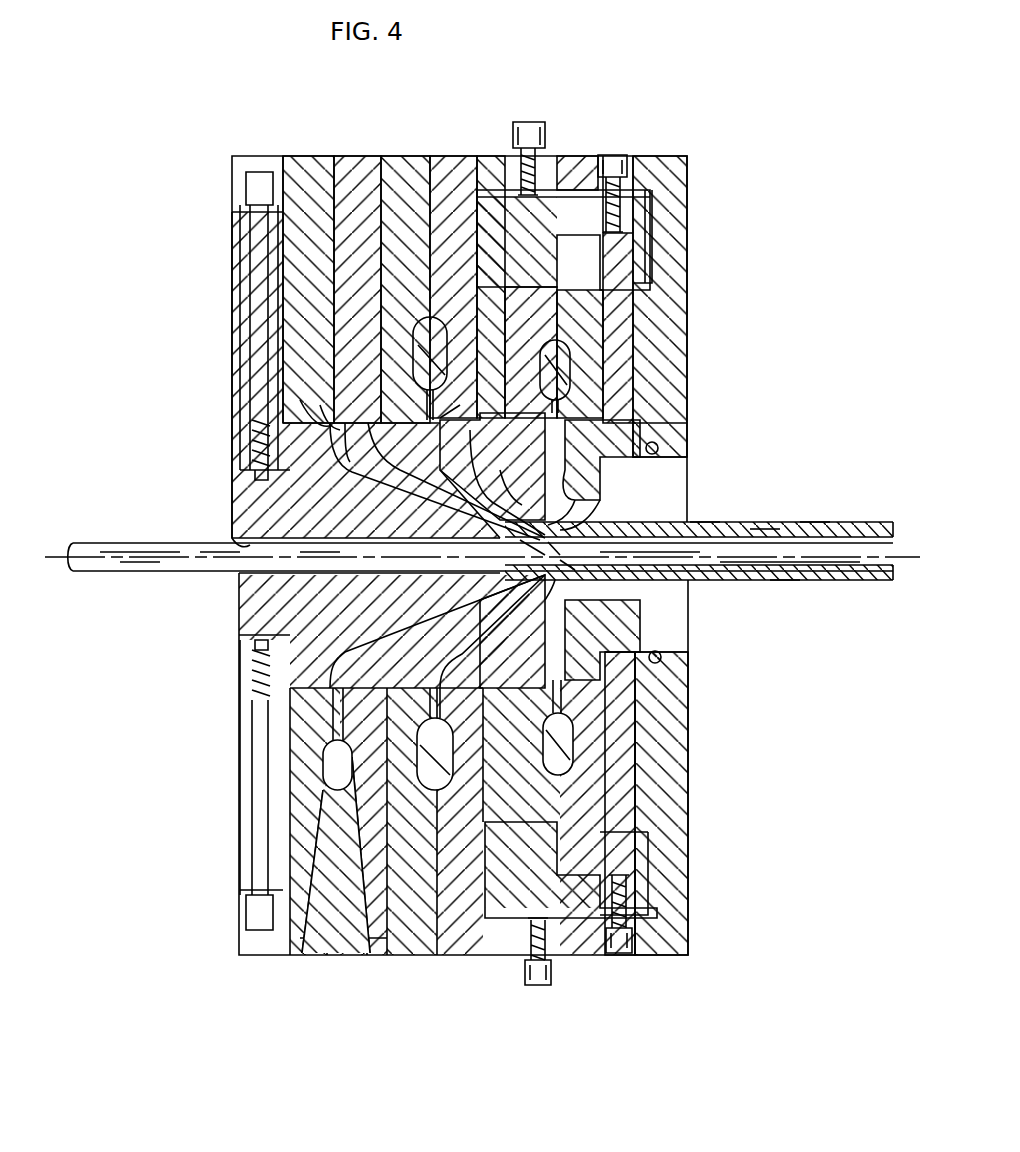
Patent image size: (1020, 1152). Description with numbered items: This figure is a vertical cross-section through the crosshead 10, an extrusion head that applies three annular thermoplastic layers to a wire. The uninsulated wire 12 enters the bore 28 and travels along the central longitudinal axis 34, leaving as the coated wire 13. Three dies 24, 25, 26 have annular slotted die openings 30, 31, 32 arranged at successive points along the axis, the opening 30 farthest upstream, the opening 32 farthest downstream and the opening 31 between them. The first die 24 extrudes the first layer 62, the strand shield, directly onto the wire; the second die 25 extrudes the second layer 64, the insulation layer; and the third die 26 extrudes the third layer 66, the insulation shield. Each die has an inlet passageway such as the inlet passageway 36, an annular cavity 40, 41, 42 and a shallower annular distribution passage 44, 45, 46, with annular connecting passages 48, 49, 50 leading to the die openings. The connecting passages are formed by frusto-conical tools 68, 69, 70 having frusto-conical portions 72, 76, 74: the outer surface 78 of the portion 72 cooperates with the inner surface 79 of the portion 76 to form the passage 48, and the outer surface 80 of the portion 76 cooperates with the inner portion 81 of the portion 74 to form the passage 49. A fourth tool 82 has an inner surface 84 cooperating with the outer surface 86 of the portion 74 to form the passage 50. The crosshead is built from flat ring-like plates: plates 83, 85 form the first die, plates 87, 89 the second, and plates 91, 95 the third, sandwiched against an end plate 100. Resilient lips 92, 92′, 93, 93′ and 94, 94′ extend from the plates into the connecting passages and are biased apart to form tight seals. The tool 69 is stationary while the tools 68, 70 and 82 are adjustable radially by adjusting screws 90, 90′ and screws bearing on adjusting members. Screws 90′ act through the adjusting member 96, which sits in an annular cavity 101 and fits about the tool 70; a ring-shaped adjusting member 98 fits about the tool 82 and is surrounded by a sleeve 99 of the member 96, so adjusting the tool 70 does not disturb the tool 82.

The crosshead 10 is at (222, 170).
The wire 12 is at (108, 548).
The coated wire 13 is at (793, 580).
The first die 24 is at (318, 958).
The second die 25 is at (437, 958).
The third die 26 is at (660, 962).
The bore 28 is at (240, 545).
The die opening 30 is at (547, 555).
The die opening 31 is at (600, 540).
The die opening 32 is at (642, 540).
The central longitudinal axis 34 is at (892, 535).
The inlet passageway 36 is at (348, 935).
The annular cavity 40 is at (330, 790).
The annular cavity 41 is at (440, 785).
The annular cavity 42 is at (570, 746).
The distribution passage 44 is at (330, 748).
The distribution passage 45 is at (340, 700).
The distribution passage 46 is at (640, 700).
The connecting passage 48 is at (402, 625).
The connecting passage 49 is at (595, 600).
The connecting passage 50 is at (600, 620).
The first layer 62 is at (732, 530).
The second layer 64 is at (778, 530).
The third layer 66 is at (820, 525).
The tool 68 is at (240, 496).
The tool 69 is at (366, 420).
The tool 70 is at (530, 360).
The frusto-conical portion 72 is at (432, 506).
The frusto-conical portion 74 is at (592, 478).
The frusto-conical portion 76 is at (487, 478).
The outer surface 78 is at (398, 476).
The inner surface 79 is at (395, 500).
The outer surface 80 is at (526, 460).
The inner portion 81 is at (528, 500).
The fourth tool 82 is at (662, 440).
The plate 83 is at (306, 160).
The inner surface 84 is at (628, 477).
The plate 85 is at (352, 165).
The outer surface 86 is at (600, 492).
The plate 87 is at (399, 165).
The plate 89 is at (444, 165).
The adjusting screw 90 is at (262, 175).
The adjusting screw 90′ is at (530, 124).
The plate 91 is at (512, 155).
The lip 92 is at (305, 400).
The lip 92′ is at (325, 410).
The lip 93 is at (420, 408).
The lip 93′ is at (460, 415).
The lip 94 is at (580, 396).
The lip 94′ is at (600, 412).
The plate 95 is at (566, 158).
The adjusting member 96 is at (488, 165).
The adjusting member 98 is at (620, 320).
The sleeve 99 is at (645, 200).
The end plate 100 is at (675, 160).
The annular cavity 101 is at (652, 237).